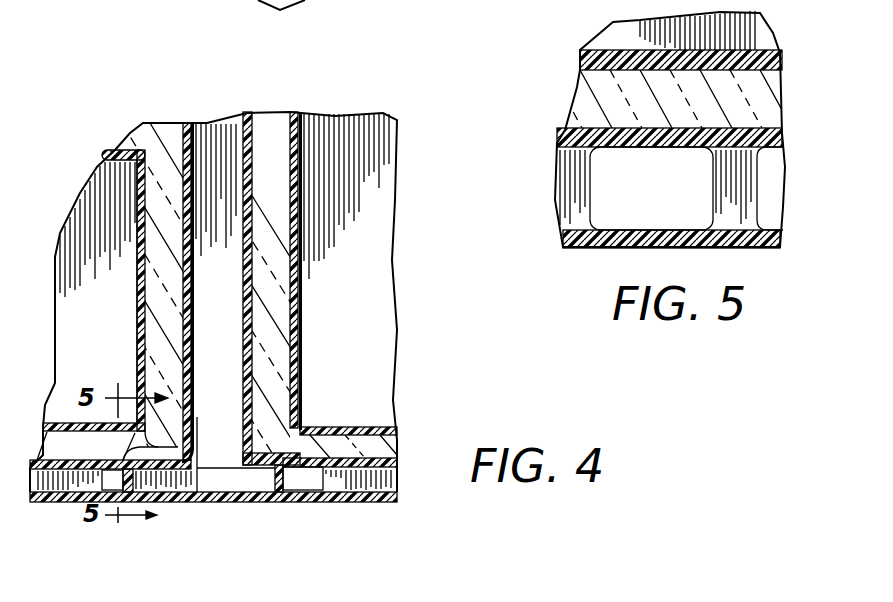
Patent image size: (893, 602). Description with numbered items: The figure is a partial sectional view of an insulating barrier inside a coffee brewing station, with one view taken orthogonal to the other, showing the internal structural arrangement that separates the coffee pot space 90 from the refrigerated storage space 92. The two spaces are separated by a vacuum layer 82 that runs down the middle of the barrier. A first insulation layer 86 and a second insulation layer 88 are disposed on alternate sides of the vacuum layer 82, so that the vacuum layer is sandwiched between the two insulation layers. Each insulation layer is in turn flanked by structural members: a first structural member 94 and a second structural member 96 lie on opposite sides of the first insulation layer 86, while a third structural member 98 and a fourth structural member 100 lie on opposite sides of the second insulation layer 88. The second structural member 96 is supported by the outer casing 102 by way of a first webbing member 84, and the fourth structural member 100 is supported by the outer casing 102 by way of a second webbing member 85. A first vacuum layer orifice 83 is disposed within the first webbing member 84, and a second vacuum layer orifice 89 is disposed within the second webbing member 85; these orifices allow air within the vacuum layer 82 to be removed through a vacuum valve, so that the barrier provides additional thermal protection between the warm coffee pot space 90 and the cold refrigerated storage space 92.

In FIG. 4, the vacuum layer 82 is at (228, 329).
In FIG. 4, the first vacuum layer orifice 83 is at (116, 480).
In FIG. 5, the first vacuum layer orifice 83 is at (655, 185).
In FIG. 4, the first webbing member 84 is at (123, 462).
In FIG. 5, the first webbing member 84 is at (731, 194).
In FIG. 4, the second webbing member 85 is at (274, 466).
In FIG. 4, the first insulation layer 86 is at (163, 318).
In FIG. 5, the first insulation layer 86 is at (641, 113).
In FIG. 4, the second insulation layer 88 is at (287, 392).
In FIG. 4, the second vacuum layer orifice 89 is at (303, 458).
In FIG. 4, the coffee pot space 90 is at (365, 300).
In FIG. 4, the refrigerated storage space 92 is at (102, 356).
In FIG. 4, the first structural member 94 is at (142, 258).
In FIG. 5, the first structural member 94 is at (735, 64).
In FIG. 4, the second structural member 96 is at (180, 355).
In FIG. 5, the second structural member 96 is at (726, 135).
In FIG. 4, the third structural member 98 is at (243, 397).
In FIG. 4, the fourth structural member 100 is at (303, 318).
In FIG. 4, the outer casing 102 is at (212, 504).